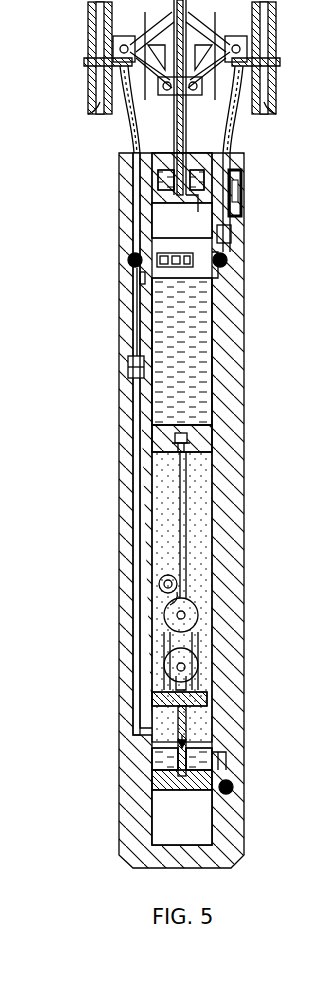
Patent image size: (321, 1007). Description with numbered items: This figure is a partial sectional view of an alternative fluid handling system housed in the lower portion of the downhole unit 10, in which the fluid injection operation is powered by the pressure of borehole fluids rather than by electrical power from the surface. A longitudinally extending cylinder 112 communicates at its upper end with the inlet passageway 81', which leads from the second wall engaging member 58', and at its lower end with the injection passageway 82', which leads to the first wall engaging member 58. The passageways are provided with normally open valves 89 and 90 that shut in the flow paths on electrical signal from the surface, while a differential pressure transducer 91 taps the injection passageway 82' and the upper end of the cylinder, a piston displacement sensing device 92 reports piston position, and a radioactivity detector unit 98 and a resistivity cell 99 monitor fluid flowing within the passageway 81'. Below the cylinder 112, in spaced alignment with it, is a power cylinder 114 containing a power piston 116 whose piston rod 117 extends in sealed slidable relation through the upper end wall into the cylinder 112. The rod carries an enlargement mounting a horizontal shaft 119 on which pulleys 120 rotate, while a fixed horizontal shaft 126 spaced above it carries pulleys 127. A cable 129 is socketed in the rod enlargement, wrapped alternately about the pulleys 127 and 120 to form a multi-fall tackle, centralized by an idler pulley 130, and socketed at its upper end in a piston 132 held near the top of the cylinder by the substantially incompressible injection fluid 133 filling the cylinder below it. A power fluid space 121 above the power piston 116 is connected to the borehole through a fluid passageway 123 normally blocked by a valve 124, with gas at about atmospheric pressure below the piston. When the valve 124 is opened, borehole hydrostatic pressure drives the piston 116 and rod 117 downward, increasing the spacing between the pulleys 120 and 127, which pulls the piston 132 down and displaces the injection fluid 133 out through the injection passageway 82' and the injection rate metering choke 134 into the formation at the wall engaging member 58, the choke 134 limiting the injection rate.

The downhole unit 10 is at (117, 167).
The first wall engaging member 58 is at (86, 58).
The second wall engaging member 58' is at (275, 58).
The inlet passageway 81' is at (247, 263).
The injection passageway 82' is at (115, 444).
The valve 89 is at (225, 268).
The valve 90 is at (128, 261).
The differential pressure transducer 91 is at (142, 290).
The piston displacement sensing device 92 is at (166, 251).
The radioactivity detector unit 98 is at (241, 200).
The resistivity cell 99 is at (231, 233).
The cylinder 112 is at (212, 396).
The power cylinder 114 is at (162, 820).
The power piston 116 is at (162, 785).
The piston rod 117 is at (162, 768).
The horizontal shaft 119 is at (186, 669).
The pulley 120 is at (198, 660).
The power fluid space 121 is at (155, 756).
The fluid passageway 123 is at (228, 758).
The valve 124 is at (232, 790).
The fixed horizontal shaft 126 is at (185, 617).
The pulley 127 is at (198, 607).
The cable 129 is at (186, 503).
The idler pulley 130 is at (164, 580).
The piston 132 is at (162, 448).
The injection fluid 133 is at (172, 498).
The injection rate metering choke 134 is at (130, 364).